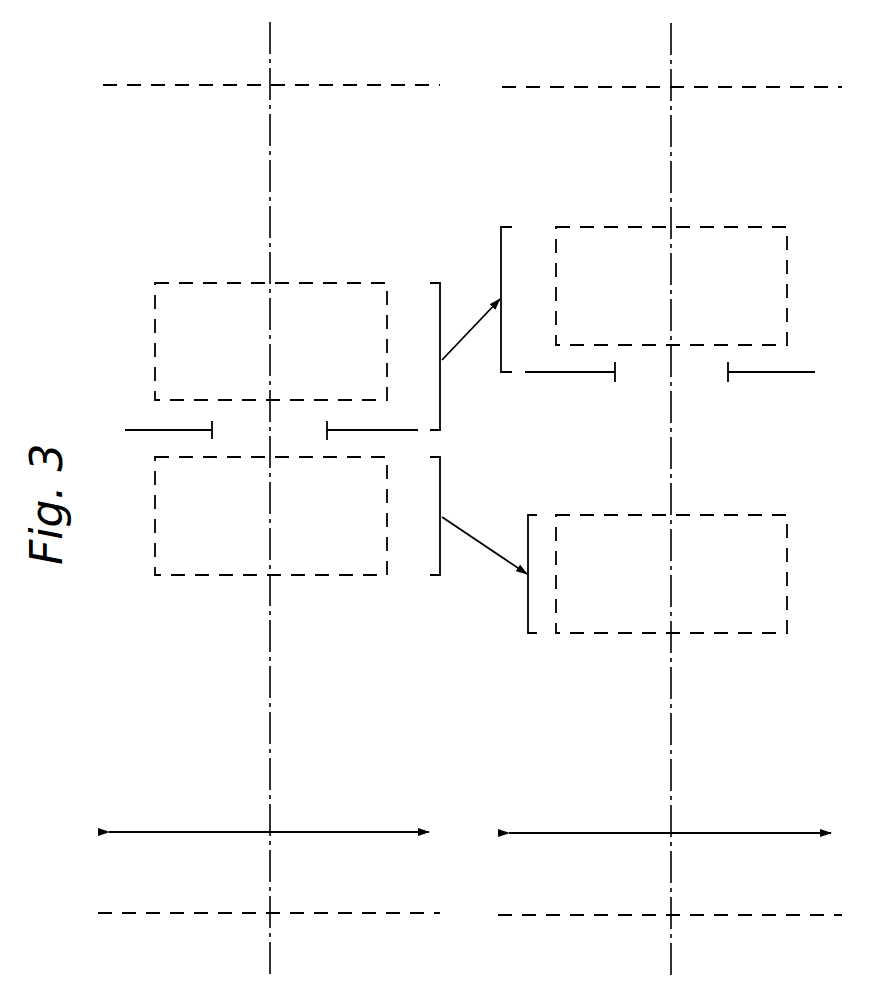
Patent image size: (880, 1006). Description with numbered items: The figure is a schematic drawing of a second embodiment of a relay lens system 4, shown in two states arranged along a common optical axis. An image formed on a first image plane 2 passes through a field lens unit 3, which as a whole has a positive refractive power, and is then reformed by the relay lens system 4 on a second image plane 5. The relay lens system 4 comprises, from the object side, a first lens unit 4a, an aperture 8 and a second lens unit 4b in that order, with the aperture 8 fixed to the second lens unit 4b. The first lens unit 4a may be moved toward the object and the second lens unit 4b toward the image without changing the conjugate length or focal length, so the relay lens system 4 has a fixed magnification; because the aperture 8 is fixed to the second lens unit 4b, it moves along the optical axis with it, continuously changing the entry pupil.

The first image plane 2 is at (182, 912).
The field lens unit 3 is at (170, 830).
The relay lens system 4 is at (345, 640).
The first lens unit 4a is at (200, 575).
The second lens unit 4b is at (202, 283).
The second image plane 5 is at (190, 83).
The aperture 8 is at (143, 430).